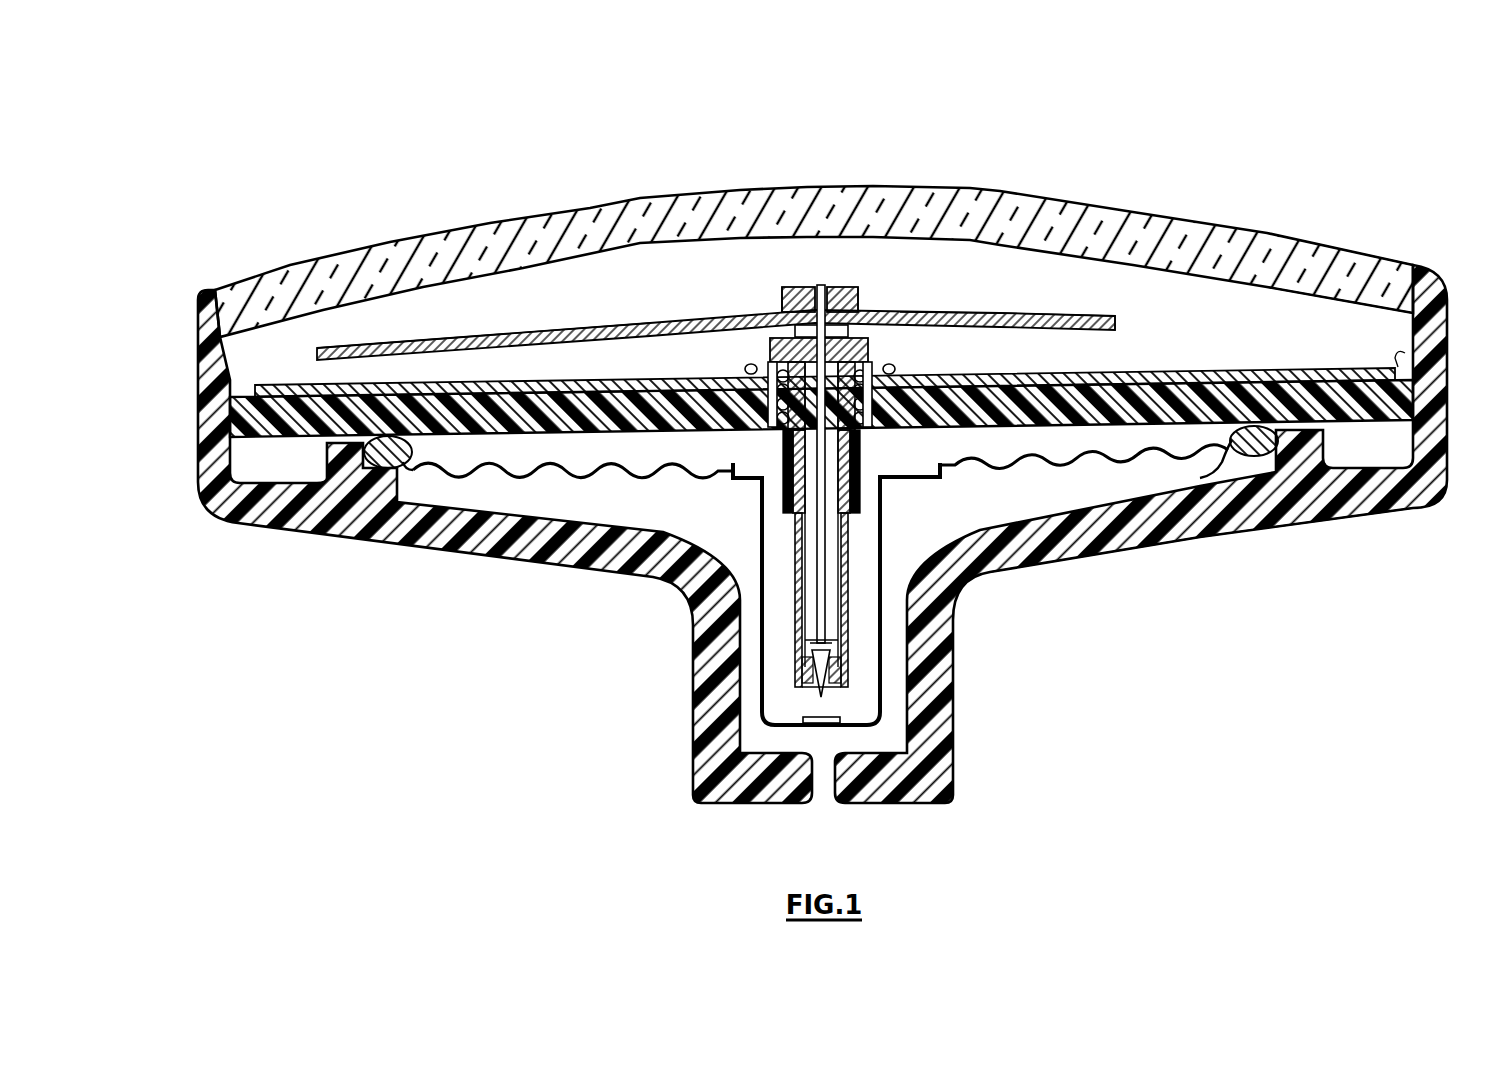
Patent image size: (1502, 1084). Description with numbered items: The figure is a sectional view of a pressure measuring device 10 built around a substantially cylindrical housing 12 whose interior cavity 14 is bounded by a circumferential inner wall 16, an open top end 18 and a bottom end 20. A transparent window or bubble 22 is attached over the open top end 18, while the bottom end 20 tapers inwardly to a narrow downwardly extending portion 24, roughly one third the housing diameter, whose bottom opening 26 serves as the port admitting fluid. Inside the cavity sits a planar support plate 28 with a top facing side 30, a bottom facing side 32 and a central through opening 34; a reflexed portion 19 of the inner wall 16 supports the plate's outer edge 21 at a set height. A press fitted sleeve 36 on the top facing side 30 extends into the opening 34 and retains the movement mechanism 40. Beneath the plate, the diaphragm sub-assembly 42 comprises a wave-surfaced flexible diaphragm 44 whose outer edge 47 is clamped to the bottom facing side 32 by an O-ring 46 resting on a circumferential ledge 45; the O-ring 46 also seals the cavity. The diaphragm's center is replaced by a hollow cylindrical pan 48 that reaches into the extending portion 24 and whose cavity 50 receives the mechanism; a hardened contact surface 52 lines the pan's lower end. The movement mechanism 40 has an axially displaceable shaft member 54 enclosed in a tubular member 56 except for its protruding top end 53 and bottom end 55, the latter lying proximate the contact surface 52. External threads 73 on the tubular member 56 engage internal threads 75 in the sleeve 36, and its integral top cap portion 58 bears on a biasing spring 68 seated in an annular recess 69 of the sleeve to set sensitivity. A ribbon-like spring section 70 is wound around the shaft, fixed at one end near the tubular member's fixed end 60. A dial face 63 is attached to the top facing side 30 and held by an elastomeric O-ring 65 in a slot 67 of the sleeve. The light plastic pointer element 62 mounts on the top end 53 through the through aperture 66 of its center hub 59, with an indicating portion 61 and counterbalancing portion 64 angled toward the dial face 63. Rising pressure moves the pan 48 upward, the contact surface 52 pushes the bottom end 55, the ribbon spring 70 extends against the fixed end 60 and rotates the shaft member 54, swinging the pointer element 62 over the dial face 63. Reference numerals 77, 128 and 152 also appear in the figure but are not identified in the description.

The pressure measuring device 10 is at (1280, 158).
The housing 12 is at (1400, 505).
The interior cavity 14 is at (1305, 318).
The circumferential inner wall 16 is at (1404, 323).
The open top end 18 is at (203, 290).
The reflexed portion 19 is at (240, 430).
The bottom end 20 is at (1178, 548).
The outer edge 21 is at (232, 432).
The window or bubble 22 is at (432, 235).
The downwardly extending portion 24 is at (955, 660).
The bottom opening 26 is at (824, 800).
The support plate 28 is at (1332, 400).
The top facing side 30 is at (1405, 358).
The bottom facing side 32 is at (1128, 420).
The central through opening 34 is at (740, 462).
The press fitted sleeve 36 is at (925, 318).
The movement mechanism 40 is at (858, 525).
The diaphragm sub-assembly 42 is at (952, 478).
The flexible diaphragm 44 is at (565, 480).
The circumferential ledge 45 is at (372, 478).
The O-ring 46 is at (408, 470).
The outer edge 47 is at (1226, 440).
The pan 48 is at (883, 705).
The cavity 50 is at (696, 654).
The contact surface 52 is at (788, 804).
The protruding top end 53 is at (858, 290).
The axially displaceable shaft member 54 is at (782, 310).
The bottom end 55 is at (805, 720).
The tubular member 56 is at (770, 550).
The top cap portion 58 is at (770, 345).
The center hub 59 is at (782, 290).
The fixed end 60 is at (710, 706).
The indicating portion 61 is at (524, 333).
The pointer element 62 is at (628, 325).
The dial face 63 is at (1271, 365).
The counterbalancing portion 64 is at (1100, 314).
The elastomeric O-ring 65 is at (895, 365).
The through aperture 66 is at (824, 287).
The slot 67 is at (893, 428).
The biasing spring 68 is at (740, 429).
The annular recess 69 is at (888, 362).
The ribbon-like spring section 70 is at (758, 616).
The external threads 73 is at (862, 465).
The internal threads 75 is at (862, 497).
The ring 77 is at (746, 369).
The cap edge 128 is at (780, 300).
The cap portion 152 is at (860, 304).